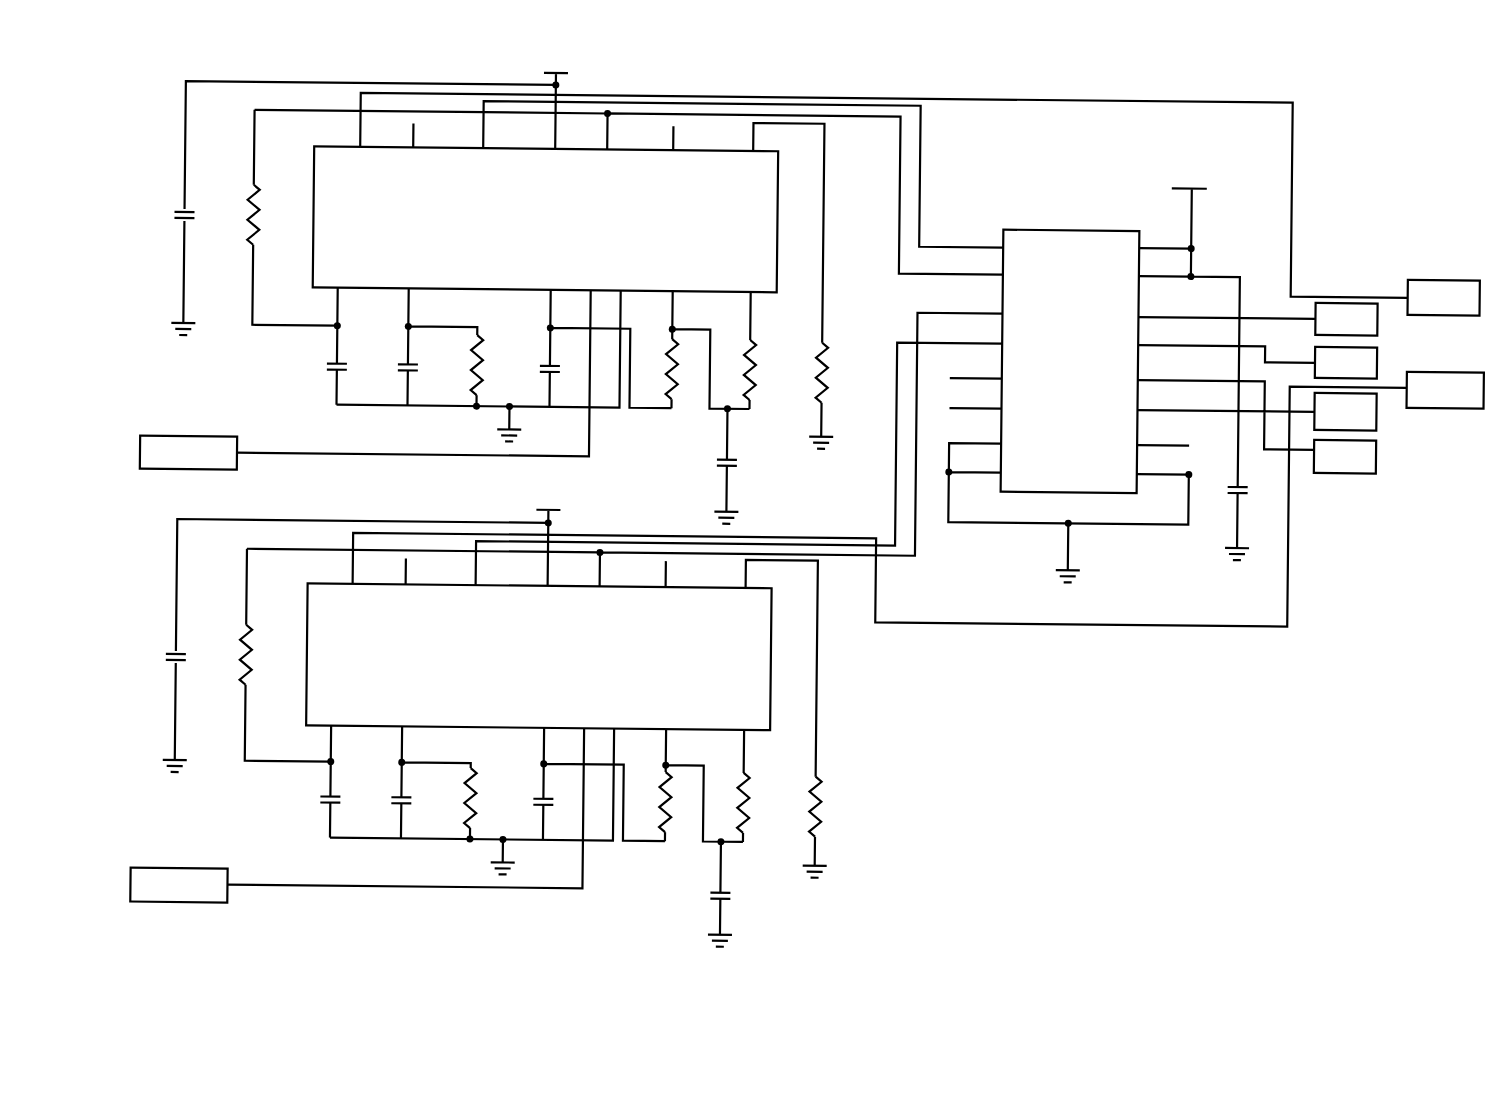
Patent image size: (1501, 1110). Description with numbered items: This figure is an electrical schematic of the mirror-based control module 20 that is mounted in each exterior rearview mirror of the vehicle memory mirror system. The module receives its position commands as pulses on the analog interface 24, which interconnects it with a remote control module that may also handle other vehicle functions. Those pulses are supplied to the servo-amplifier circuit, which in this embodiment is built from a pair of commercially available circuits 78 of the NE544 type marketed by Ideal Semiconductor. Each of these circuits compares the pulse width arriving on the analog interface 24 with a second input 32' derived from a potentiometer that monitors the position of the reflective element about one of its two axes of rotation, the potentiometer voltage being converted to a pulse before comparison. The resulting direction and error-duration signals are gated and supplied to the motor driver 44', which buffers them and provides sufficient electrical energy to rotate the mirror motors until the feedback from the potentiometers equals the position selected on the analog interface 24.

The mirror-based control module 20 is at (997, 763).
The analog interface 24 is at (207, 441).
The input from potentiometer 32' is at (919, 361).
The motor driver 44' is at (1071, 334).
The commercially available circuits 78 is at (776, 171).